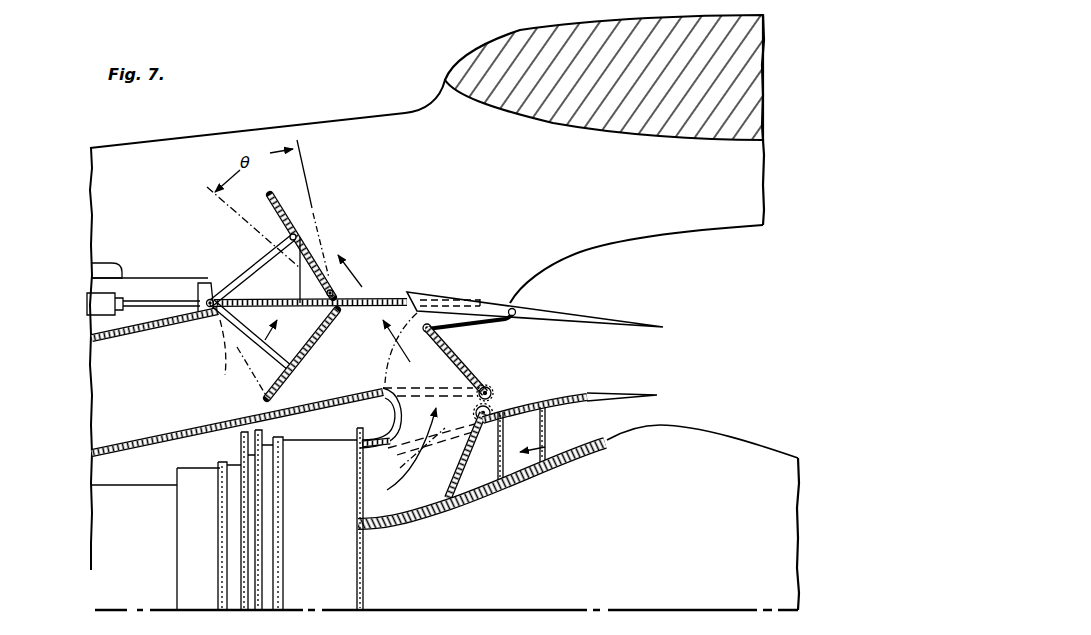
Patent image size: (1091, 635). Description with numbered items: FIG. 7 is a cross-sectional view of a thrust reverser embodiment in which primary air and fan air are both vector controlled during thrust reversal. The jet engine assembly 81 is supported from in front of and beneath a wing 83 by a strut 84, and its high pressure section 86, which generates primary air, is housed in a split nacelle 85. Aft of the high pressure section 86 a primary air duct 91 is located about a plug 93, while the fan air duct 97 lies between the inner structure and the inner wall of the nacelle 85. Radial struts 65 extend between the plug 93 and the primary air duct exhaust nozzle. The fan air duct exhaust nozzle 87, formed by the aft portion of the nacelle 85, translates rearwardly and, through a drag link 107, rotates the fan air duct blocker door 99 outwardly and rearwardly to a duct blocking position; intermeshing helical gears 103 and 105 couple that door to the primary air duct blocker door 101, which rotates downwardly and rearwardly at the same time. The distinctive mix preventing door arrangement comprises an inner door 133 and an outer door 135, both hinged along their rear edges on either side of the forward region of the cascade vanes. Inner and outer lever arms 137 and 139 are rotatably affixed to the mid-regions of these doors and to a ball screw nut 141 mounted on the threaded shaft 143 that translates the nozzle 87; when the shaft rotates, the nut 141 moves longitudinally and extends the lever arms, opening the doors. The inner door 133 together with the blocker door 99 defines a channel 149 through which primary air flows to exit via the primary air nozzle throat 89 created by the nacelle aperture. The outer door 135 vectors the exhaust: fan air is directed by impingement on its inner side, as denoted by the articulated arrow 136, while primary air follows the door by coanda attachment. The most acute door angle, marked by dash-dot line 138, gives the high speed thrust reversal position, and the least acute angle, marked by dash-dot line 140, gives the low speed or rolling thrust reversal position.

The radial struts 65 is at (560, 468).
The jet engine assembly 81 is at (603, 288).
The wing 83 is at (500, 65).
The strut 84 is at (335, 118).
The nacelle 85 is at (92, 262).
The high pressure section 86 is at (110, 532).
The fan air duct exhaust nozzle 87 is at (631, 329).
The primary air nozzle throat 89 is at (383, 297).
The primary air duct 91 is at (402, 507).
The plug 93 is at (698, 448).
The fan air duct 97 is at (180, 390).
The fan air duct blocker door 99 is at (467, 360).
The primary air duct blocker door 101 is at (470, 500).
The intermeshing helical gear 103 is at (494, 392).
The intermeshing helical gear 105 is at (495, 403).
The drag link 107 is at (515, 321).
The inner door 133 is at (316, 348).
The outer door 135 is at (315, 240).
The articulated arrow 136 is at (223, 232).
The inner lever arm 137 is at (237, 345).
The dash-dot line 138 is at (208, 190).
The outer lever arm 139 is at (245, 263).
The dash-dot line 140 is at (307, 170).
The ball screw nut 141 is at (197, 282).
The threaded shaft 143 is at (140, 300).
The channel 149 is at (384, 375).